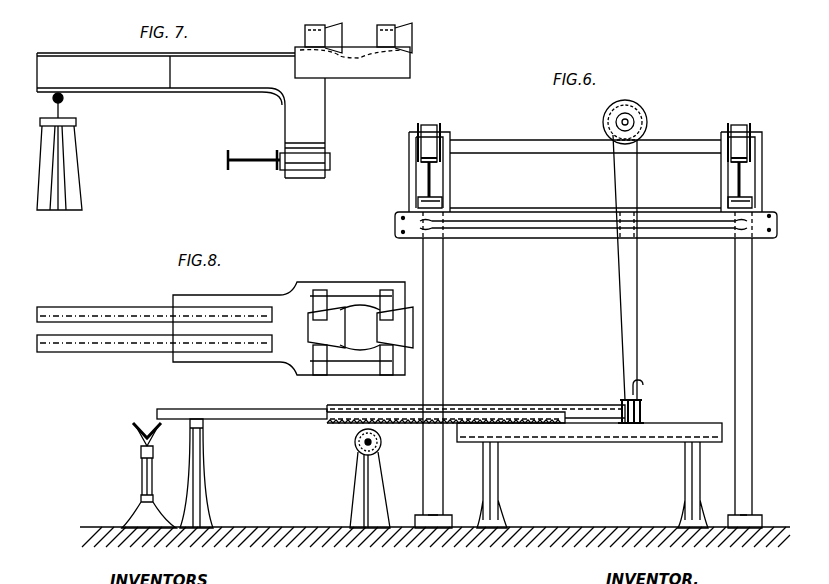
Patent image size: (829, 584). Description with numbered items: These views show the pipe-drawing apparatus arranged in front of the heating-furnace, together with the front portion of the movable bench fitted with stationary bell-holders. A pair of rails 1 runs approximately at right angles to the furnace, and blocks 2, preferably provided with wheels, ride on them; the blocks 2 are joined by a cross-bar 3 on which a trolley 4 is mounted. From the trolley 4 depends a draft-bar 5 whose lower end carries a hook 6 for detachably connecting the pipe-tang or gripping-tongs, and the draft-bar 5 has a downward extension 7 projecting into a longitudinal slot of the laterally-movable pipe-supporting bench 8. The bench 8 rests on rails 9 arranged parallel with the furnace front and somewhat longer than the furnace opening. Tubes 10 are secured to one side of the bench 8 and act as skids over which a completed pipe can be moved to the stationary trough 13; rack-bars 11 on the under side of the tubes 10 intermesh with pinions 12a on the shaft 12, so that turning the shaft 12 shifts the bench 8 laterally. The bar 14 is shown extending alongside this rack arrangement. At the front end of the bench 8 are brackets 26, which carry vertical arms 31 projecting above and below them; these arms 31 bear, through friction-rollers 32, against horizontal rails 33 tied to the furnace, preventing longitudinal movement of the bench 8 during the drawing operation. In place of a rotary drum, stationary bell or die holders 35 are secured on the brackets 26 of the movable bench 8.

In FIG. 6, the rails 1 is at (432, 178).
In FIG. 6, the blocks 2 is at (430, 125).
In FIG. 6, the cross-bar 3 is at (576, 150).
In FIG. 6, the trolley 4 is at (632, 108).
In FIG. 6, the draft-bar 5 is at (634, 300).
In FIG. 6, the hook 6 is at (643, 385).
In FIG. 6, the downward extension 7 is at (642, 411).
In FIG. 7, the pipe-supporting bench 8 is at (152, 80).
In FIG. 8, the pipe-supporting bench 8 is at (122, 310).
In FIG. 6, the pipe-supporting bench 8 is at (616, 400).
In FIG. 7, the rails 9 is at (62, 106).
In FIG. 6, the rails 9 is at (592, 442).
In FIG. 6, the tubes 10 is at (508, 412).
In FIG. 6, the rack-bars 11 is at (412, 428).
In FIG. 6, the shaft 12 is at (355, 440).
In FIG. 6, the pinions 12a is at (360, 455).
In FIG. 6, the trough 13 is at (135, 428).
In FIG. 6, the extension bar 14 is at (237, 409).
In FIG. 7, the brackets 26 is at (372, 70).
In FIG. 8, the brackets 26 is at (292, 295).
In FIG. 7, the vertical arms 31 is at (305, 128).
In FIG. 7, the friction-rollers 32 is at (330, 162).
In FIG. 7, the horizontal rails 33 is at (252, 160).
In FIG. 7, the stationary bell or die holders 35 is at (385, 25).
In FIG. 8, the stationary bell or die holders 35 is at (385, 302).